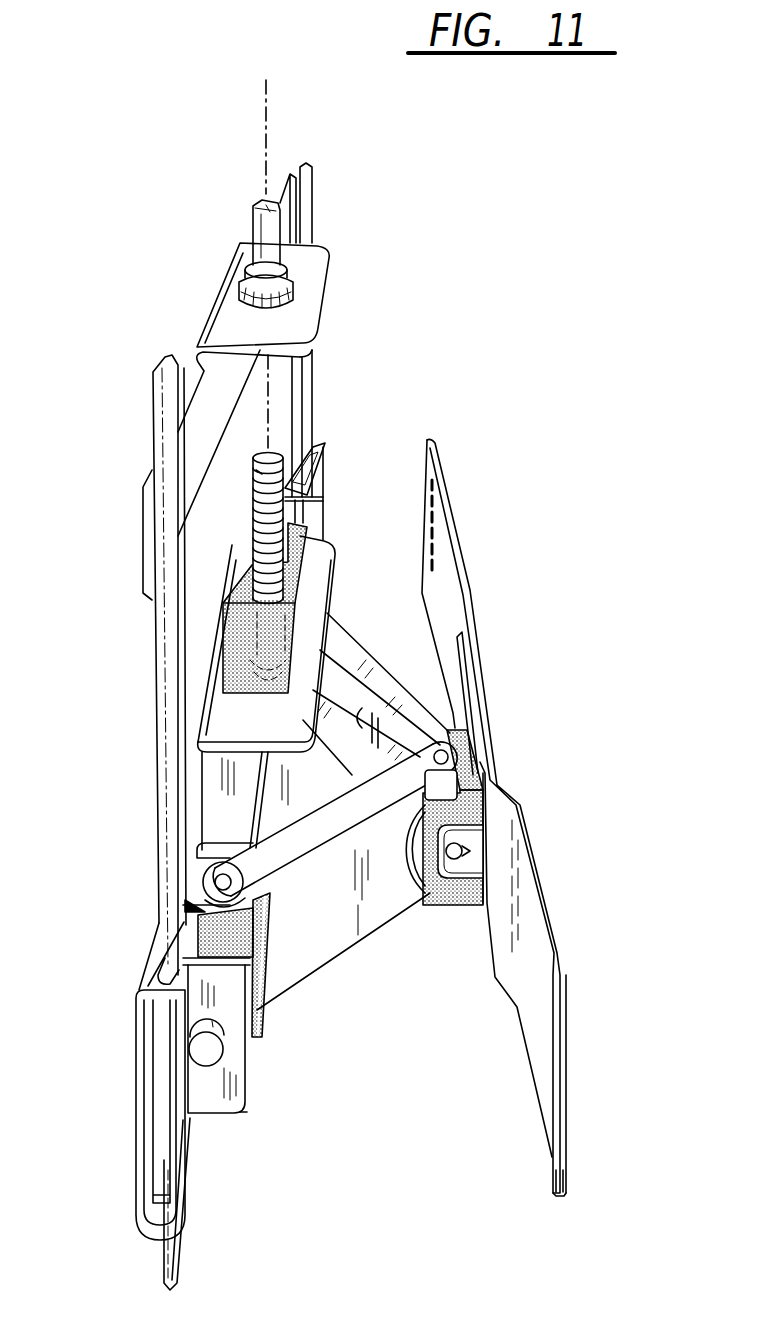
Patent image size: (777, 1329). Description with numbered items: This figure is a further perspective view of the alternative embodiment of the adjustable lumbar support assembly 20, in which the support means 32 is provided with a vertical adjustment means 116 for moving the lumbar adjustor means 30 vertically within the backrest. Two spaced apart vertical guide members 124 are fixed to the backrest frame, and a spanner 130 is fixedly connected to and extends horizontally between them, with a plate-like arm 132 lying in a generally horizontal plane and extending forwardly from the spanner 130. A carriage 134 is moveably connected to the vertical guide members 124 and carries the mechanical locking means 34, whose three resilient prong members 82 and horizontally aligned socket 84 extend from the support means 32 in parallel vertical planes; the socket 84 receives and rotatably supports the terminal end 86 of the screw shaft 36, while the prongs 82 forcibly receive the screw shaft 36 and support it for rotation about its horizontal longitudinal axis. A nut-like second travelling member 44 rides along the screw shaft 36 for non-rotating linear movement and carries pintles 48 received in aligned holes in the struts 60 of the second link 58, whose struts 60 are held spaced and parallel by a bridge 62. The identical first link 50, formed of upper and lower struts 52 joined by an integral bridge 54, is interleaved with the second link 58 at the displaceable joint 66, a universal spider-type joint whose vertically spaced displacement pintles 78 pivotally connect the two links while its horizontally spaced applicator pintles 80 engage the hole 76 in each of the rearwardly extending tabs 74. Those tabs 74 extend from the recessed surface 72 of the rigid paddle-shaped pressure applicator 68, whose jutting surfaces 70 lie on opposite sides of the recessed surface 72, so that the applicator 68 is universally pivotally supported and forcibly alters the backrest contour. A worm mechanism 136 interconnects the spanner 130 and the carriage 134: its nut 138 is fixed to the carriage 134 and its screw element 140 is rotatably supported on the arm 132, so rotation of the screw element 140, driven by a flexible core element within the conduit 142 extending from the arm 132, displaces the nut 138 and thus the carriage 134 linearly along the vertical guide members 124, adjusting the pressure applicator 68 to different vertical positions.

The adjustable lumbar support assembly 20 is at (536, 446).
The lumbar adjustor means 30 is at (564, 1197).
The support means 32 is at (144, 1223).
The mechanical locking means 34 is at (245, 1119).
The screw shaft 36 is at (270, 760).
The second travelling member 44 is at (263, 941).
The pintles 48 is at (232, 880).
The first link 50 is at (338, 645).
The struts 52 is at (338, 727).
The bridge 54 is at (370, 710).
The second link 58 is at (340, 965).
The struts 60 is at (327, 827).
The bridge 62 is at (383, 892).
The displaceable joint 66 is at (452, 907).
The pressure applicator 68 is at (567, 978).
The jutting surfaces 70 is at (458, 536).
The recessed surface 72 is at (478, 689).
The tabs 74 is at (483, 885).
The hole 76 is at (462, 851).
The displacement pintles 78 is at (470, 747).
The applicator pintles 80 is at (465, 854).
The resilient prong members 82 is at (229, 842).
The socket 84 is at (246, 1073).
The terminal end 86 is at (226, 1055).
The vertical adjustment means 116 is at (334, 255).
The vertical guide members 124 is at (310, 365).
The spanner 130 is at (228, 420).
The arm 132 is at (312, 289).
The carriage 134 is at (137, 1070).
The worm mechanism 136 is at (252, 484).
The nut 138 is at (230, 620).
The screw element 140 is at (257, 510).
The conduit 142 is at (252, 210).